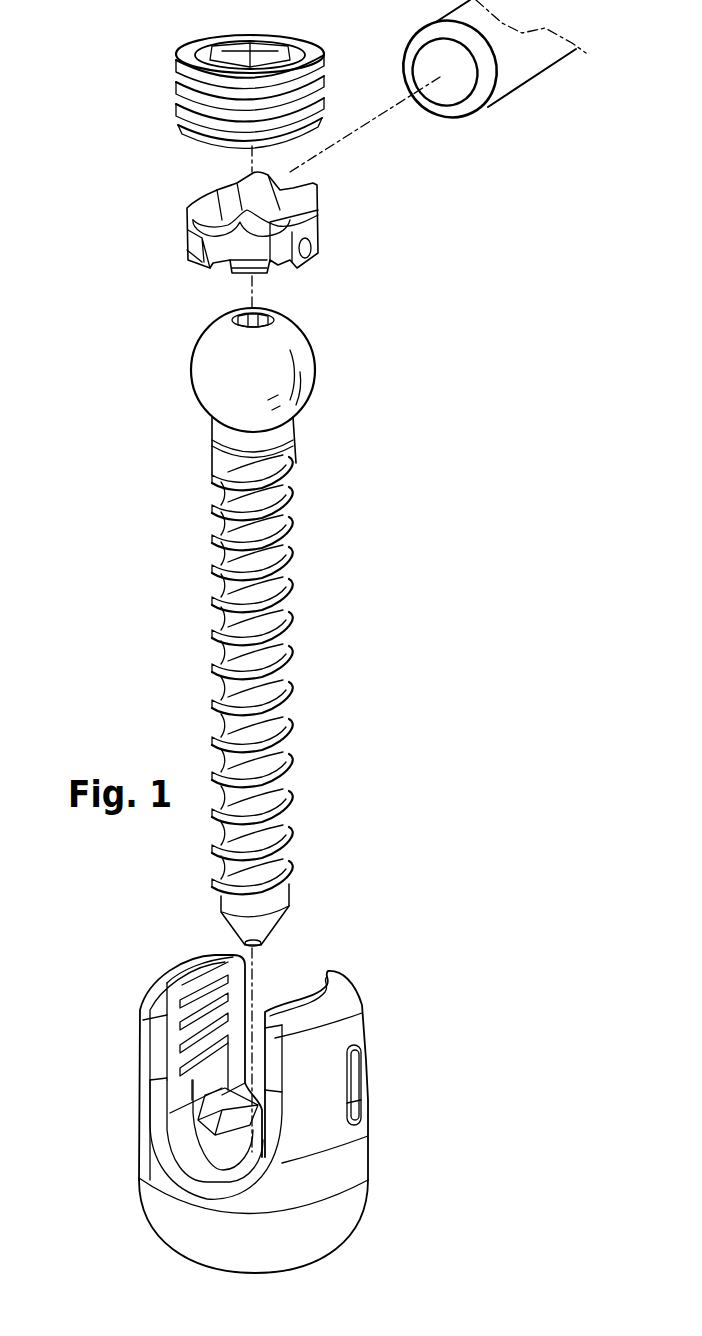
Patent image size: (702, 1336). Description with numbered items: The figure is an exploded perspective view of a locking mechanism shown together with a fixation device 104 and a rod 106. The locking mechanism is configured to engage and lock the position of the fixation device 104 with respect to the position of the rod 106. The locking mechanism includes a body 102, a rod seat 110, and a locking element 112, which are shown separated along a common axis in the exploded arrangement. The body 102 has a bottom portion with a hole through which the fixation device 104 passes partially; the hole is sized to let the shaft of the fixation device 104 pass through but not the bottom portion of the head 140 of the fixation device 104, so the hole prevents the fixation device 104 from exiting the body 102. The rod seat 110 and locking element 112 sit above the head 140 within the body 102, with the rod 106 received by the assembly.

The body 102 is at (353, 1163).
The fixation device 104 is at (333, 525).
The rod 106 is at (506, 58).
The rod seat 110 is at (305, 232).
The locking element 112 is at (176, 92).
The head 140 is at (288, 380).